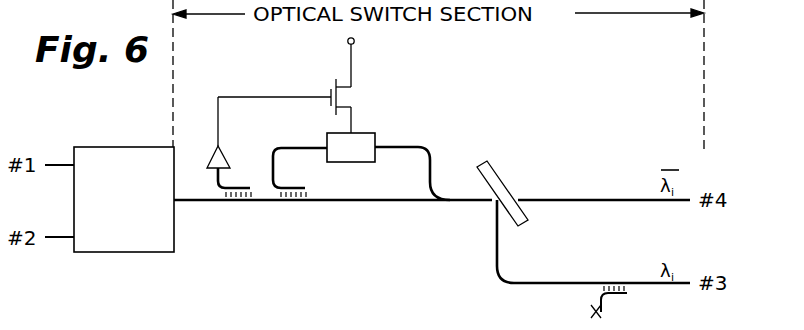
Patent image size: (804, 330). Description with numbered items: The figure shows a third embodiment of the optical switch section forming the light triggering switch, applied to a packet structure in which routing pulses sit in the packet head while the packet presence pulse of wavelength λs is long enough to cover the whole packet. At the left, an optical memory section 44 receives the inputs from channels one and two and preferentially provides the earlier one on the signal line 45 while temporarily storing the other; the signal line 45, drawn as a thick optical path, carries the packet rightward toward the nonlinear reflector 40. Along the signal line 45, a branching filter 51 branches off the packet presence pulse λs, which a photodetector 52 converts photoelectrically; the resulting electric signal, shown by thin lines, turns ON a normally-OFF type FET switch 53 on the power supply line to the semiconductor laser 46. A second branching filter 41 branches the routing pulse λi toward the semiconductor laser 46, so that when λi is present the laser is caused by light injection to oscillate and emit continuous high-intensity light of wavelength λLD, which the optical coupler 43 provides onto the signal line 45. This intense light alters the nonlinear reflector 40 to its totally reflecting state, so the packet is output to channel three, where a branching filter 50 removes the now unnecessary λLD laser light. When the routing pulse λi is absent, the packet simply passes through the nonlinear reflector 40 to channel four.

The nonlinear reflector 40 is at (490, 167).
The branching filter 41 is at (292, 208).
The optical coupler 43 is at (437, 205).
The optical memory section 44 is at (120, 147).
The signal line 45 is at (190, 204).
The semiconductor laser 46 is at (371, 142).
The branching filter 50 is at (610, 276).
The branching filter 51 is at (243, 208).
The photodetector 52 is at (226, 160).
The normally-OFF type FET switch 53 is at (331, 90).